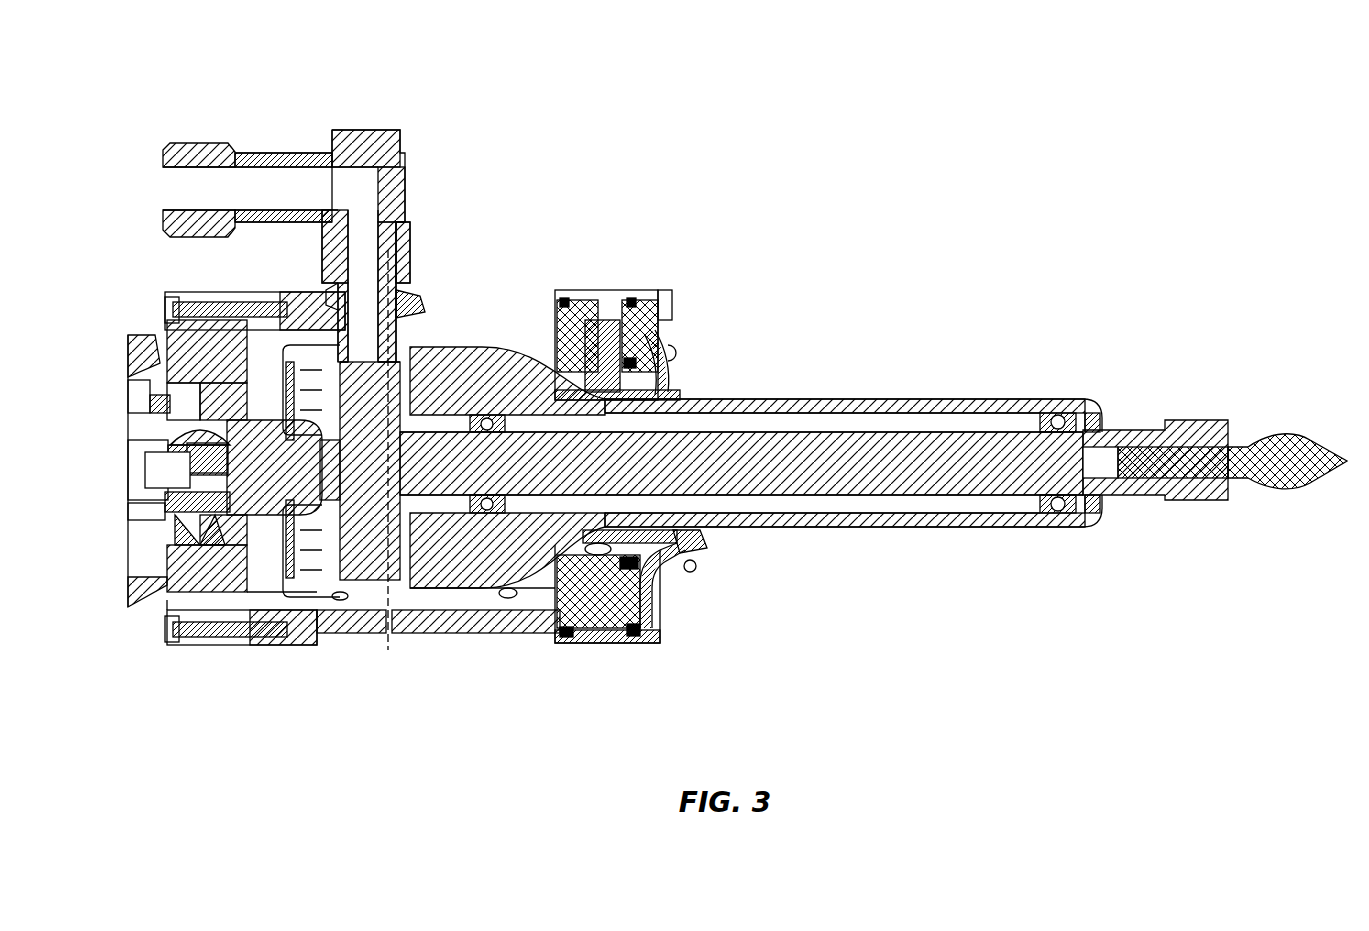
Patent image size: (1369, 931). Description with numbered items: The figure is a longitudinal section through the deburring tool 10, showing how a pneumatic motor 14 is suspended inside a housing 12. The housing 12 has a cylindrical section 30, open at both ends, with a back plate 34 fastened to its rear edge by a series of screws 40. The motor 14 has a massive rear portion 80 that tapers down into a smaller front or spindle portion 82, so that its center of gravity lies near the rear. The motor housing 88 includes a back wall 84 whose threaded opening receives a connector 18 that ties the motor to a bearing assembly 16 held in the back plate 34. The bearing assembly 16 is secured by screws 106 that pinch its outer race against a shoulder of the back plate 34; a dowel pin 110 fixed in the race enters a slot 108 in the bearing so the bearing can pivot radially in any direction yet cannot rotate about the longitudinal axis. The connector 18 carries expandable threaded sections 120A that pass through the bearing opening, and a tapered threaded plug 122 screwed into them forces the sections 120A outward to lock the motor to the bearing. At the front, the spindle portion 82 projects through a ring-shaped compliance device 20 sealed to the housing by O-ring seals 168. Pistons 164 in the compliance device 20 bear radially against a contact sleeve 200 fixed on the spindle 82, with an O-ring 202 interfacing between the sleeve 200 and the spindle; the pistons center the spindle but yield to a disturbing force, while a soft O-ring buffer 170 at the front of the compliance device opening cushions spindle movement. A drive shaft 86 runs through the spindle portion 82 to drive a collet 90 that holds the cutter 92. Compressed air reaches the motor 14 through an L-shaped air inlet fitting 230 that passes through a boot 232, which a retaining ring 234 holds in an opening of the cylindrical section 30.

The deburring tool 10 is at (787, 132).
The housing 12 is at (578, 233).
The pneumatic motor 14 is at (766, 382).
The bearing assembly 16 is at (126, 471).
The connector 18 is at (305, 497).
The compliance device 20 is at (545, 585).
The cylindrical section 30 is at (420, 635).
The back plate 34 is at (167, 582).
The screws 40 is at (180, 298).
The rear portion 80 is at (382, 598).
The front or spindle portion 82 is at (997, 528).
The back wall 84 is at (185, 640).
The drive shaft 86 is at (943, 468).
The motor housing 88 is at (872, 527).
The collet 90 is at (1197, 490).
The cutter 92 is at (1292, 452).
The screws 106 is at (130, 368).
The slot 108 is at (167, 505).
The dowel pin 110 is at (167, 552).
The expandable threaded sections 120A is at (165, 425).
The tapered threaded plug 122 is at (165, 452).
The piston 164 is at (590, 337).
The O-ring seals 168 is at (632, 630).
The O-ring buffer 170 is at (642, 350).
The contact sleeve 200 is at (677, 545).
The O-ring 202 is at (703, 532).
The air inlet fitting 230 is at (352, 130).
The boot 232 is at (398, 298).
The retaining ring 234 is at (420, 290).